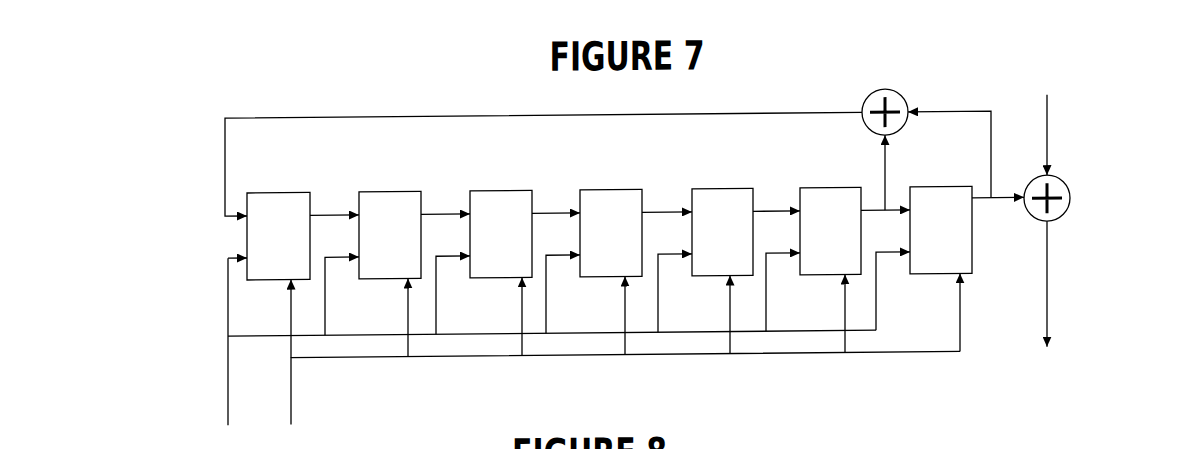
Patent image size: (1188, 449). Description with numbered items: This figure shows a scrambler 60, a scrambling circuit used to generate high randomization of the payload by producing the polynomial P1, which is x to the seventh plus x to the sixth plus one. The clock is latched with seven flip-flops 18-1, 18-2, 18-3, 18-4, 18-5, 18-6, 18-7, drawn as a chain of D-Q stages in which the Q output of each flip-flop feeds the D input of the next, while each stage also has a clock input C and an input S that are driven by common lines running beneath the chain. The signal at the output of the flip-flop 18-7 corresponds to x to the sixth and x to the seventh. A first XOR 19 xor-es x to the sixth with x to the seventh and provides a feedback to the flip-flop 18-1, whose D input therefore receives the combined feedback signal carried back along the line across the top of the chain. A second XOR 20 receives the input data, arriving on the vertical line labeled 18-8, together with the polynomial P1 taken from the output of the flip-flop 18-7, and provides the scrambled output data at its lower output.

The scrambler 60 is at (375, 79).
The flip-flop 18-1 is at (295, 192).
The flip-flop 18-2 is at (410, 193).
The flip-flop 18-3 is at (522, 194).
The flip-flop 18-4 is at (590, 194).
The flip-flop 18-5 is at (743, 194).
The flip-flop 18-6 is at (833, 194).
The flip-flop 18-7 is at (958, 194).
The input data line 18-8 is at (1047, 103).
The first XOR 19 is at (875, 94).
The second XOR 20 is at (1075, 198).